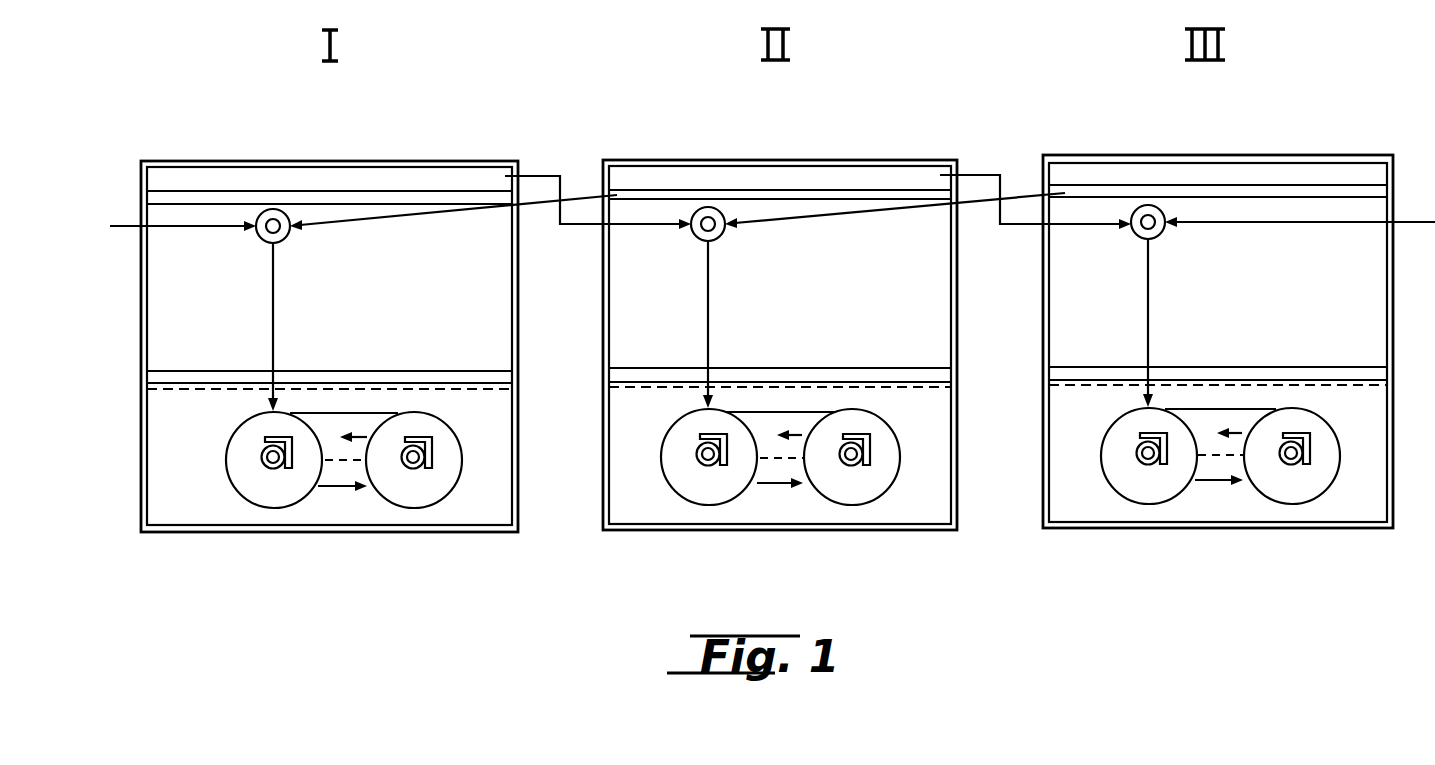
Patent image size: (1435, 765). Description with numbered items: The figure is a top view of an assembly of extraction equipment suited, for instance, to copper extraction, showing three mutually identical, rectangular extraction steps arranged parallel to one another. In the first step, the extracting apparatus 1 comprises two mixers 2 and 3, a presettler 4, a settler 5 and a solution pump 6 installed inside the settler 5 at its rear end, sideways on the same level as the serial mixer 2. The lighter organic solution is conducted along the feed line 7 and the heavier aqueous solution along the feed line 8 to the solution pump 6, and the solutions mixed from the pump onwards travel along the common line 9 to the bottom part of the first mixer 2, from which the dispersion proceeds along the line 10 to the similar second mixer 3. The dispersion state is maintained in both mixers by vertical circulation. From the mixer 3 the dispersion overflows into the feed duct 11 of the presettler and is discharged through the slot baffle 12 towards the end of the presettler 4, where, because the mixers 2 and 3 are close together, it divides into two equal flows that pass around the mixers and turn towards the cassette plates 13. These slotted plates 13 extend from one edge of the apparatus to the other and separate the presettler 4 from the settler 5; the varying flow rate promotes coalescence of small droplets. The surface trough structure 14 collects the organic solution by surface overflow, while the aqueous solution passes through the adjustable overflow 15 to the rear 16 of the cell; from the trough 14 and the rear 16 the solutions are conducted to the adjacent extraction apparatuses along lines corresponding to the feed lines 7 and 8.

The extracting apparatus 1 is at (129, 343).
The first mixer 2 is at (277, 490).
The second mixer 3 is at (408, 492).
The presettler 4 is at (477, 507).
The settler 5 is at (496, 293).
The solution pump 6 is at (282, 233).
The feed line 7 is at (377, 220).
The feed line 8 is at (187, 230).
The common line 9 is at (277, 330).
The line 10 is at (343, 490).
The feed duct 11 is at (330, 432).
The slot baffle 12 is at (338, 463).
The cassette plates 13 is at (442, 380).
The surface trough structure 14 is at (185, 195).
The adjustable overflow 15 is at (272, 192).
The rear of the cell 16 is at (358, 182).